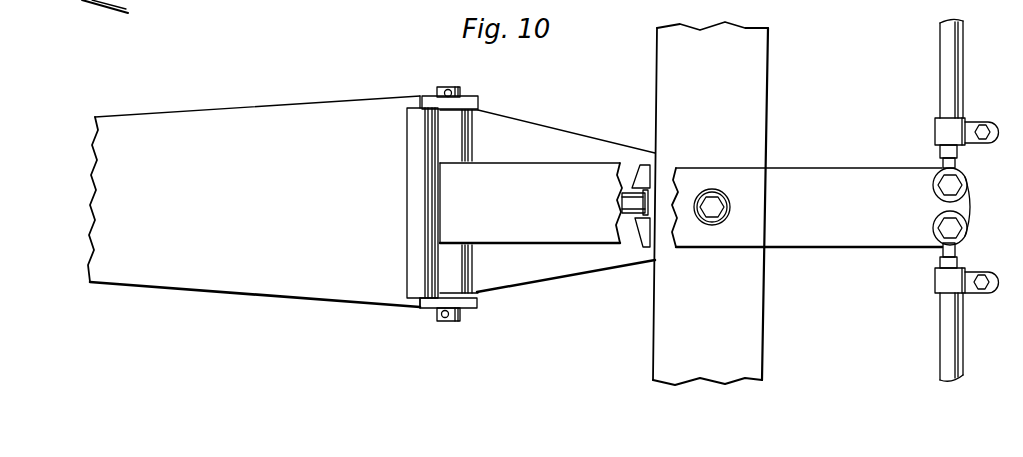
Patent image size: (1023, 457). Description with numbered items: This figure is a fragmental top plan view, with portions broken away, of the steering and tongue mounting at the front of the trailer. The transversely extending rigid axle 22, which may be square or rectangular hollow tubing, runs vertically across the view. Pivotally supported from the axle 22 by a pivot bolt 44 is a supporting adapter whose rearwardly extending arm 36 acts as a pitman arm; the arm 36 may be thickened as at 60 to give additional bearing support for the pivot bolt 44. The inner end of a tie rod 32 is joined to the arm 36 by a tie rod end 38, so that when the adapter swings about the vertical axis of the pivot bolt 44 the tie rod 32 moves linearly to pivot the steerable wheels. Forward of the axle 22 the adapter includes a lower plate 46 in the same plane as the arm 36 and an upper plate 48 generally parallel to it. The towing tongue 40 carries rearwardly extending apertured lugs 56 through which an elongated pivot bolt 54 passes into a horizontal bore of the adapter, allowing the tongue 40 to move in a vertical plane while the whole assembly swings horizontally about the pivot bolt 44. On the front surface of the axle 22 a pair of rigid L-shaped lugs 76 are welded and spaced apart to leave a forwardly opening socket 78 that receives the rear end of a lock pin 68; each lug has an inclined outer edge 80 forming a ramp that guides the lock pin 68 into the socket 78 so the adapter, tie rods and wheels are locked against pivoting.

The axle 22 is at (747, 130).
The tie rod 32 is at (947, 60).
The arm 36 is at (825, 182).
The tie rod end 38 is at (943, 183).
The towing tongue 40 is at (248, 118).
The pivot bolt 44 is at (714, 205).
The lower plate 46 is at (540, 180).
The upper plate 48 is at (522, 127).
The pivot bolt 54 is at (452, 322).
The lugs 56 is at (473, 102).
The thickened portion 60 is at (712, 224).
The lock pin 68 is at (627, 198).
The L-shaped lugs 76 is at (645, 228).
The socket 78 is at (655, 188).
The inclined outer edge 80 is at (638, 221).